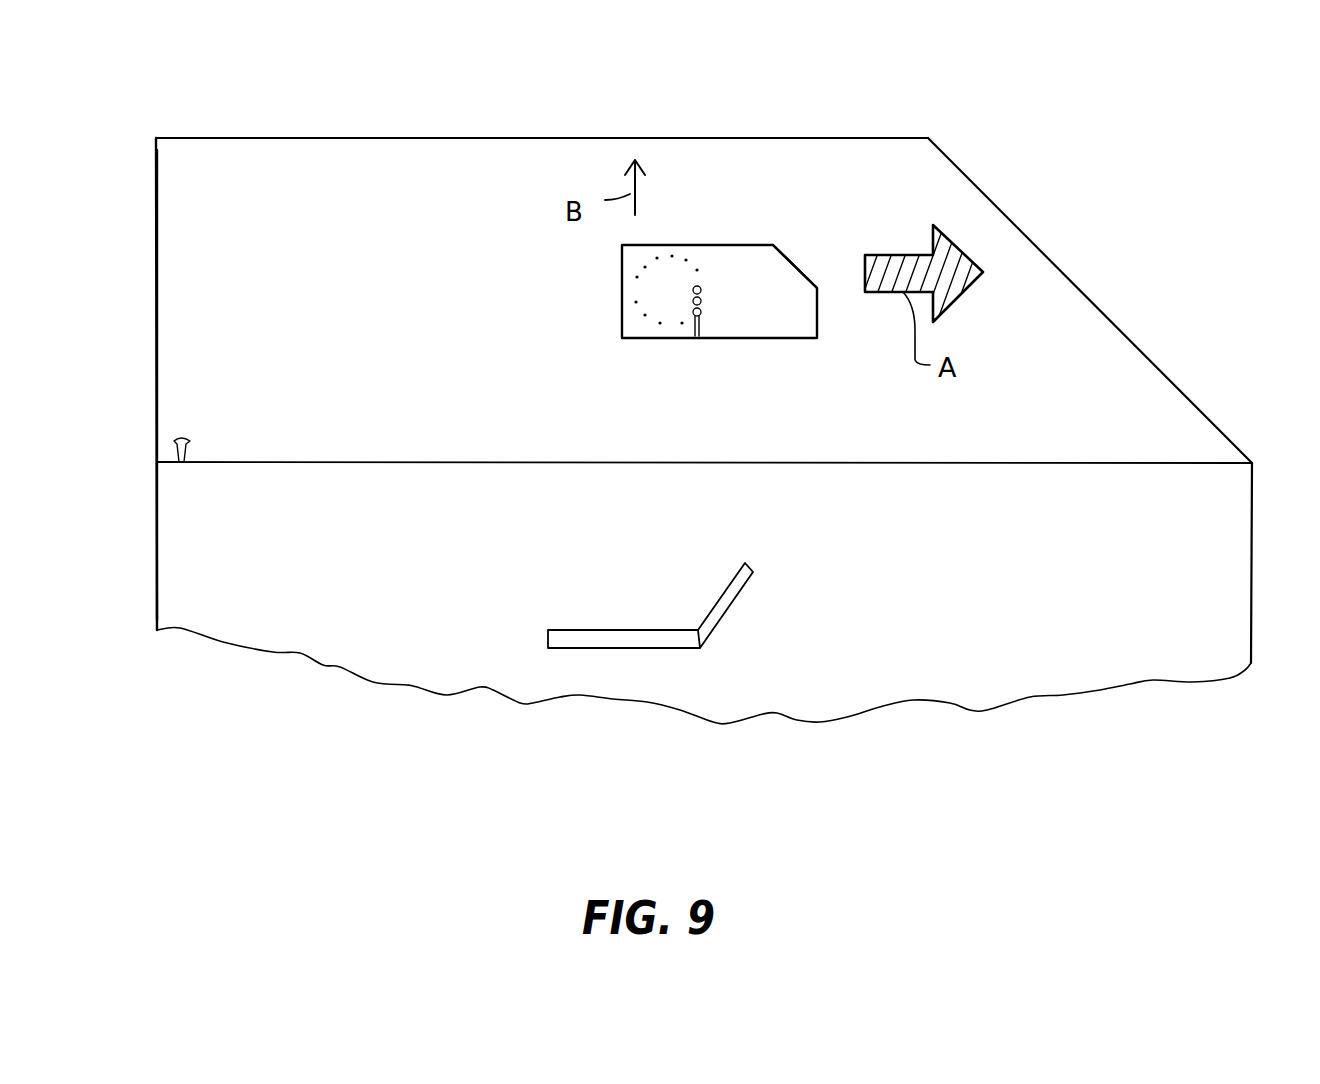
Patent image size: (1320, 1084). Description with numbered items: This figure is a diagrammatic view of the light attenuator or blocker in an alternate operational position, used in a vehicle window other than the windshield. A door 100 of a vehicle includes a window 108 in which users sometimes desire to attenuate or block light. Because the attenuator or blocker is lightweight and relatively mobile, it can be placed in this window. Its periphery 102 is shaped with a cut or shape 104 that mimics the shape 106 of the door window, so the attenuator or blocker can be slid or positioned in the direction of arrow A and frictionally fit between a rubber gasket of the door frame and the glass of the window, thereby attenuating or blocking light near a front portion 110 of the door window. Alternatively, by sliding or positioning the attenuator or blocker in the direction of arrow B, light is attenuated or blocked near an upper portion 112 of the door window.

The door 100 is at (331, 138).
The periphery 102 is at (806, 338).
The cut or shape 104 is at (792, 253).
The shape of the door window 106 is at (1020, 227).
The window 108 is at (258, 233).
The front portion 110 is at (1200, 447).
The upper portion 112 is at (510, 174).